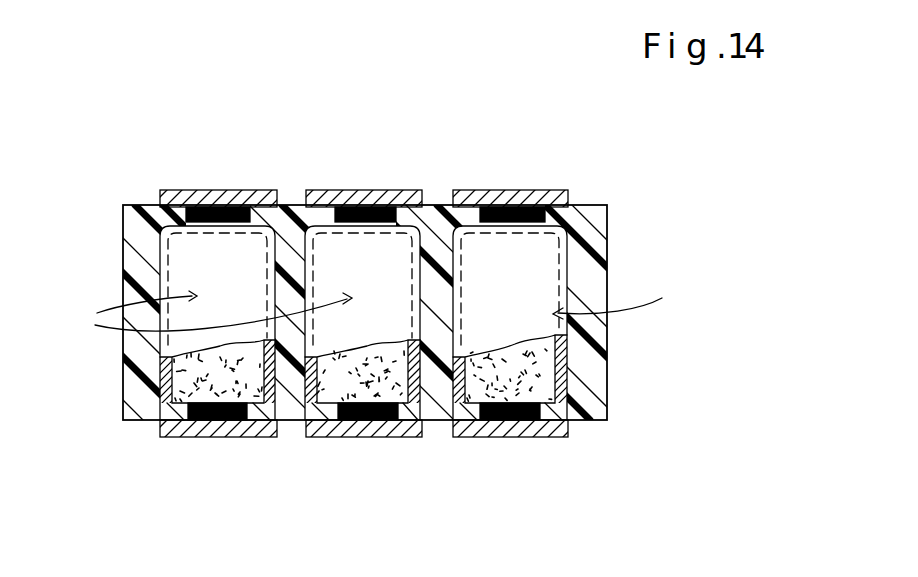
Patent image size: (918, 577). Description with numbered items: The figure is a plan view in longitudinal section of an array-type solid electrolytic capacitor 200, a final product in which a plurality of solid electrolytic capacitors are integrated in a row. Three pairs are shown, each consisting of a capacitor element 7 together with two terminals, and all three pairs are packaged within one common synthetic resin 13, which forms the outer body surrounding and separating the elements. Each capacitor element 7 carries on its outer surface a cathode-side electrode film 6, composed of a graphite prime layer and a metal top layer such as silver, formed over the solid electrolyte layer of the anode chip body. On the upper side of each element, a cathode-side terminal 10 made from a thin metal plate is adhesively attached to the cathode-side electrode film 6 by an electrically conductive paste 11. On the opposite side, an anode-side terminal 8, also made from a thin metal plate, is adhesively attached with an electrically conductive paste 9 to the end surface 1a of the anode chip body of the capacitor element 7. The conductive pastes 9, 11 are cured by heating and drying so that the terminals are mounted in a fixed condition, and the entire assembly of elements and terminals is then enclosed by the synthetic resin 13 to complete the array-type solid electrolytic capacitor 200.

The solid electrolytic capacitor of an array type 200 is at (393, 294).
The synthetic resin 13 is at (603, 248).
The cathode-side electrode film 6 is at (195, 262).
The capacitor element 7 is at (377, 312).
The electrically conductive paste 11 is at (215, 210).
The cathode-side terminal 10 is at (246, 200).
The anode-side terminal 8 is at (352, 438).
The electrically conductive paste 9 is at (195, 438).
The end surface 1a is at (157, 419).